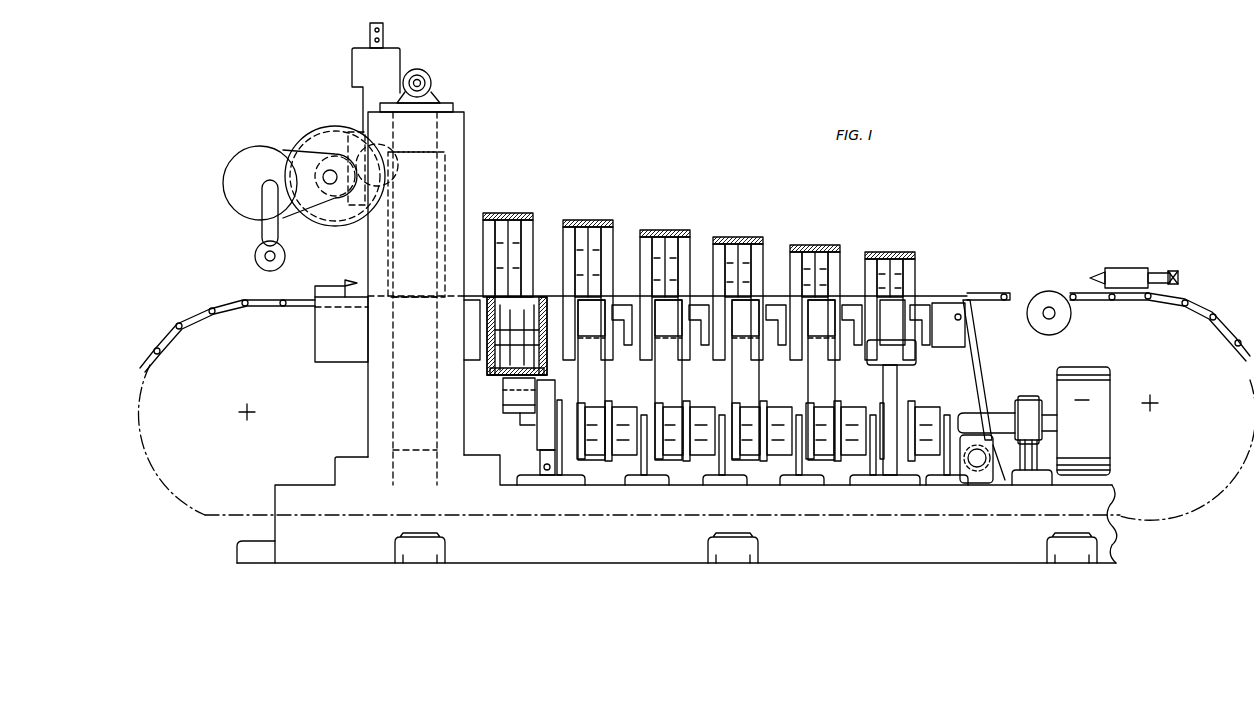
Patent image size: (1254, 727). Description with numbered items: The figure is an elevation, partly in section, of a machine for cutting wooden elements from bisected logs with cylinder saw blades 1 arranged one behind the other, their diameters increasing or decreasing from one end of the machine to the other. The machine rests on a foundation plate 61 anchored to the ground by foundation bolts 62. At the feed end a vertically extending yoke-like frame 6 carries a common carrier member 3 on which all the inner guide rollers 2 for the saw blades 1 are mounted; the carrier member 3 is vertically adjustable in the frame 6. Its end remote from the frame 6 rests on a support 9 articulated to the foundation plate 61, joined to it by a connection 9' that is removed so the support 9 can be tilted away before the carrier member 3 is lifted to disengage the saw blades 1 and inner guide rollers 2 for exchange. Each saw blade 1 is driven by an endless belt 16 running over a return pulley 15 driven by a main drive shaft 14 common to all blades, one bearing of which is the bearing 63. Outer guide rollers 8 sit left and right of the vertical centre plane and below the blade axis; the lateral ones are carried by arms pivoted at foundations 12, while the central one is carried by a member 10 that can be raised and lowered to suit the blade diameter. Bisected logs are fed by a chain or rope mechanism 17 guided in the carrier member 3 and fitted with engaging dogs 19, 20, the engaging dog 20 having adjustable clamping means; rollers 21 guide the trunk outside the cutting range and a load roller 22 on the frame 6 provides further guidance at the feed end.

The cylinder saw blade 1 is at (512, 213).
The inner guide roller 2 is at (503, 345).
The carrier member 3 is at (323, 343).
The frame 6 is at (455, 141).
The outer guide roller 8 is at (503, 392).
The support 9 is at (982, 391).
The connection 9' is at (948, 326).
The member 10 is at (538, 443).
The foundation 12 is at (895, 383).
The main drive shaft 14 is at (997, 416).
The return pulley 15 is at (632, 406).
The endless belt 16 is at (598, 384).
The chain or rope mechanism 17 is at (201, 313).
The engaging dog 19 is at (335, 291).
The engaging dog 20 is at (1124, 275).
The roller 21 is at (1046, 294).
The load roller 22 is at (393, 172).
The foundation plate 61 is at (629, 542).
The foundation bolt 62 is at (440, 547).
The bearing 63 is at (1032, 402).